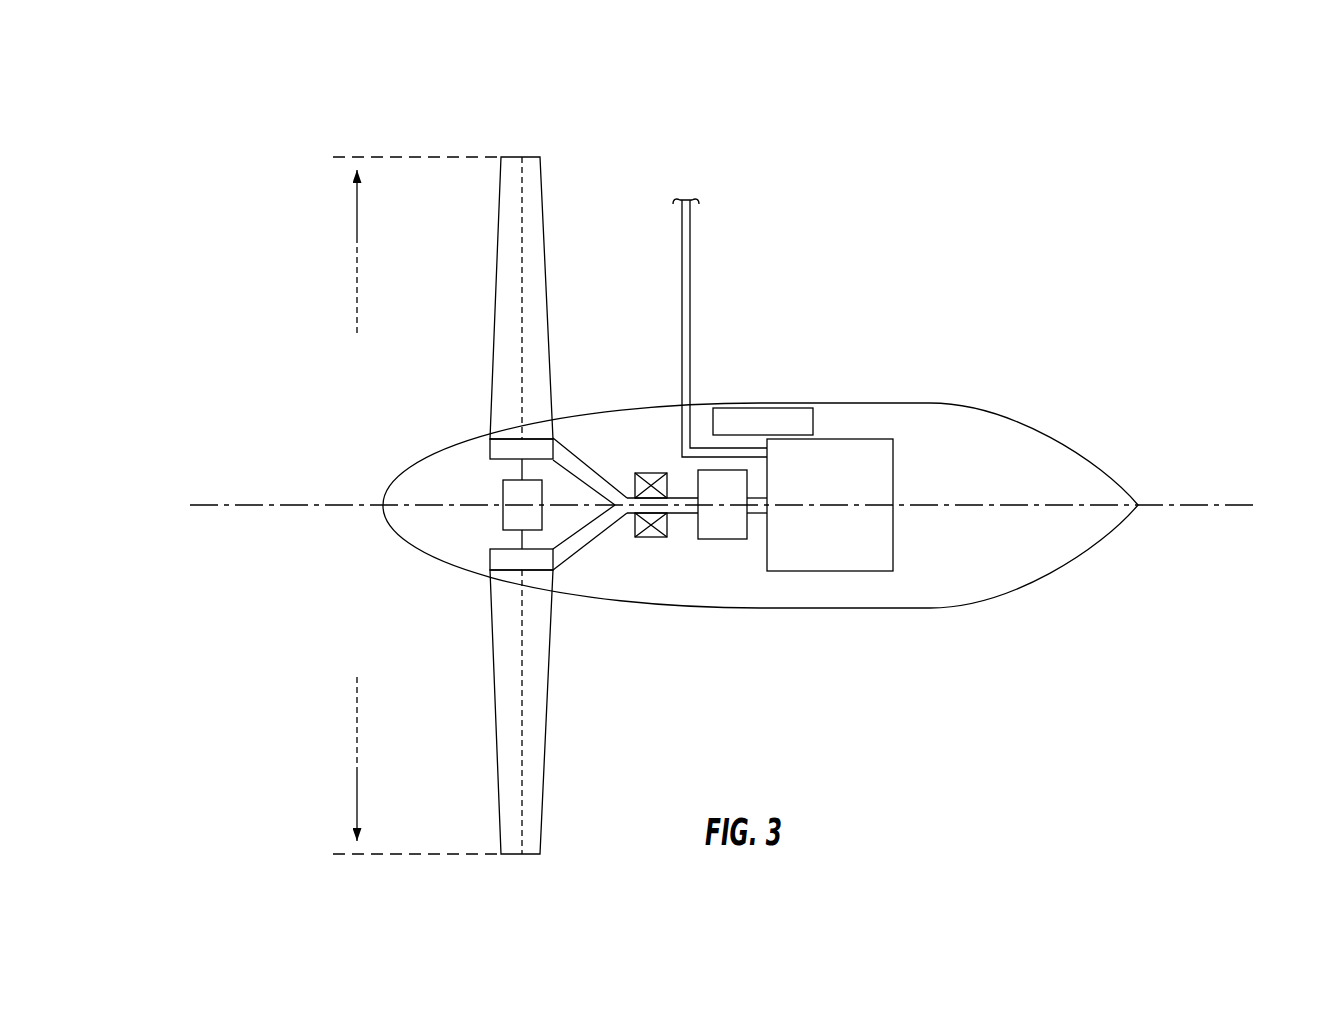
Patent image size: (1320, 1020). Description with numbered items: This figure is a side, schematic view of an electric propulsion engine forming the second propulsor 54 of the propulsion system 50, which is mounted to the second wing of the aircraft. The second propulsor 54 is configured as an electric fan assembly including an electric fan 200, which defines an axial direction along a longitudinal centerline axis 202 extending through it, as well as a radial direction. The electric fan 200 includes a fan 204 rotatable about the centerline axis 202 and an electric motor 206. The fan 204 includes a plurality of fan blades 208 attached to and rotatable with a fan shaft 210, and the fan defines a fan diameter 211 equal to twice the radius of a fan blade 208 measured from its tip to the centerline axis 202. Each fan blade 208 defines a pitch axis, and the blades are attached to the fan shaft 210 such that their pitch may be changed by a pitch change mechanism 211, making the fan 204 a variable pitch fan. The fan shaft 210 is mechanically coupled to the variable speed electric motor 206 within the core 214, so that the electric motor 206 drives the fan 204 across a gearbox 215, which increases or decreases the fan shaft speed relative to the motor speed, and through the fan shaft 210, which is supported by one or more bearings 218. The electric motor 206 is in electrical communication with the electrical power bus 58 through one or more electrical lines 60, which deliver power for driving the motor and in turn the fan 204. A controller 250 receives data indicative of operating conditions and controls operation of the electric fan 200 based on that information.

The propulsion system 50 is at (961, 241).
The second propulsor 54 is at (880, 184).
The electrical power bus 58 is at (740, 229).
The electrical lines 60 is at (691, 308).
The electric fan 200 is at (405, 138).
The longitudinal centerline axis 202 is at (1197, 504).
The fan 204 is at (428, 316).
The electric motor 206 is at (893, 490).
The fan blades 208 is at (490, 408).
The fan shaft 210 is at (678, 513).
The pitch change mechanism 211 is at (355, 265).
The core 214 is at (988, 412).
The gearbox 215 is at (728, 539).
The bearings 218 is at (650, 473).
The controller 250 is at (762, 425).